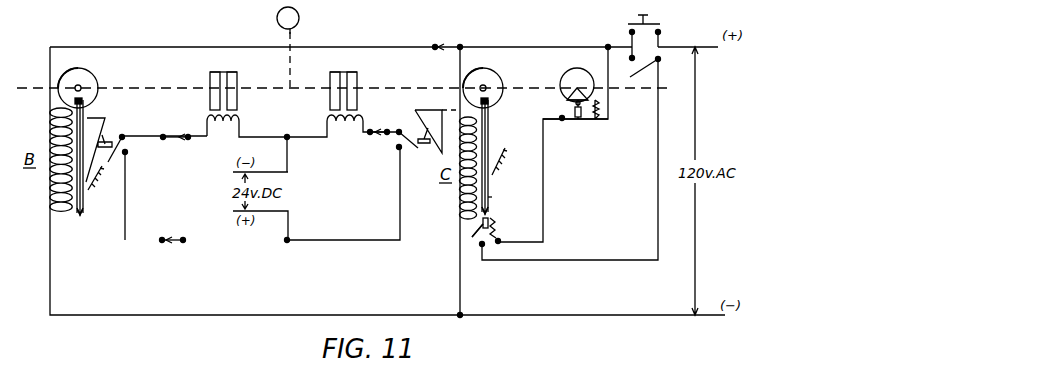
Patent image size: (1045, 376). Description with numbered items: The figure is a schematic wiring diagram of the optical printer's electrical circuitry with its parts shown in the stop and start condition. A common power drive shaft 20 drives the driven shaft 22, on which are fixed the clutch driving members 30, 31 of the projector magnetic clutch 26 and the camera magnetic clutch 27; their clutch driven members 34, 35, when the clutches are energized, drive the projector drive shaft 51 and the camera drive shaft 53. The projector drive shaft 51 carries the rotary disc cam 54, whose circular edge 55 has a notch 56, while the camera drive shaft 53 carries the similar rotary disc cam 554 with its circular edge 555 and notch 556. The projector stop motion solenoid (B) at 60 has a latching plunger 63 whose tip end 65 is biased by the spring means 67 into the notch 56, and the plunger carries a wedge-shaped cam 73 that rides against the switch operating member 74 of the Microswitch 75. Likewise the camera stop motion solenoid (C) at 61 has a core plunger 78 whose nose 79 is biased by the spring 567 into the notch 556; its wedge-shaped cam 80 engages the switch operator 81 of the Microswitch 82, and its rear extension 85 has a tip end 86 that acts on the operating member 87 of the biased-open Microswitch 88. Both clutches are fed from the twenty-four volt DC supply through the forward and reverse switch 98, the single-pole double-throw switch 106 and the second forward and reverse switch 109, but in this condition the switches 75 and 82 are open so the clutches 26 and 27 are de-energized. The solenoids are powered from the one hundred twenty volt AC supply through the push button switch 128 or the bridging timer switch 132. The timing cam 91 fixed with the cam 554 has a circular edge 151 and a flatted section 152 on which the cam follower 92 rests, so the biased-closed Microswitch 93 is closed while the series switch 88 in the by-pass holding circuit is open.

The common power drive shaft 20 is at (303, 45).
The driven shaft 22 is at (280, 93).
The projector magnetic clutch 26 is at (232, 64).
The camera magnetic clutch 27 is at (354, 65).
The clutch driving member 30 is at (238, 71).
The clutch driving member 31 is at (332, 71).
The clutch driven member 34 is at (212, 71).
The clutch driven member 35 is at (358, 71).
The projector drive shaft 51 is at (139, 85).
The camera drive shaft 53 is at (413, 79).
The rotary disc cam 54 is at (99, 71).
The circular edge 55 is at (66, 78).
The notch 56 is at (74, 101).
The solenoid (B) 60 is at (49, 216).
The solenoid (C) 61 is at (452, 216).
The latching plunger 63 is at (88, 198).
The tip end 65 is at (76, 112).
The spring means 67 is at (98, 180).
The wedge-shaped cam 73 is at (99, 128).
The switch operating member 74 is at (118, 145).
The Microswitch 75 is at (128, 151).
The core plunger 78 is at (490, 138).
The nose 79 is at (489, 108).
The wedge-shaped cam 80 is at (436, 112).
The switch operator 81 is at (422, 146).
The Microswitch 82 is at (393, 159).
The rear extension 85 is at (490, 198).
The tip end 86 is at (490, 213).
The operating member 87 is at (468, 236).
The Microswitch 88 is at (491, 249).
The timing cam 91 is at (565, 66).
The cam follower 92 is at (572, 106).
The Microswitch 93 is at (584, 132).
The forward and reverse switch 98 is at (371, 144).
The single-pole, double-throw switch 106 is at (178, 247).
The forward and reverse switch 109 is at (182, 146).
The push button switch 128 is at (656, 13).
The timer switch 132 is at (656, 80).
The circular edge 151 is at (582, 68).
The flatted section 152 is at (600, 100).
The rotary disc cam 554 is at (496, 71).
The circular edge 555 is at (467, 72).
The notch 556 is at (489, 102).
The spring 567 is at (500, 168).